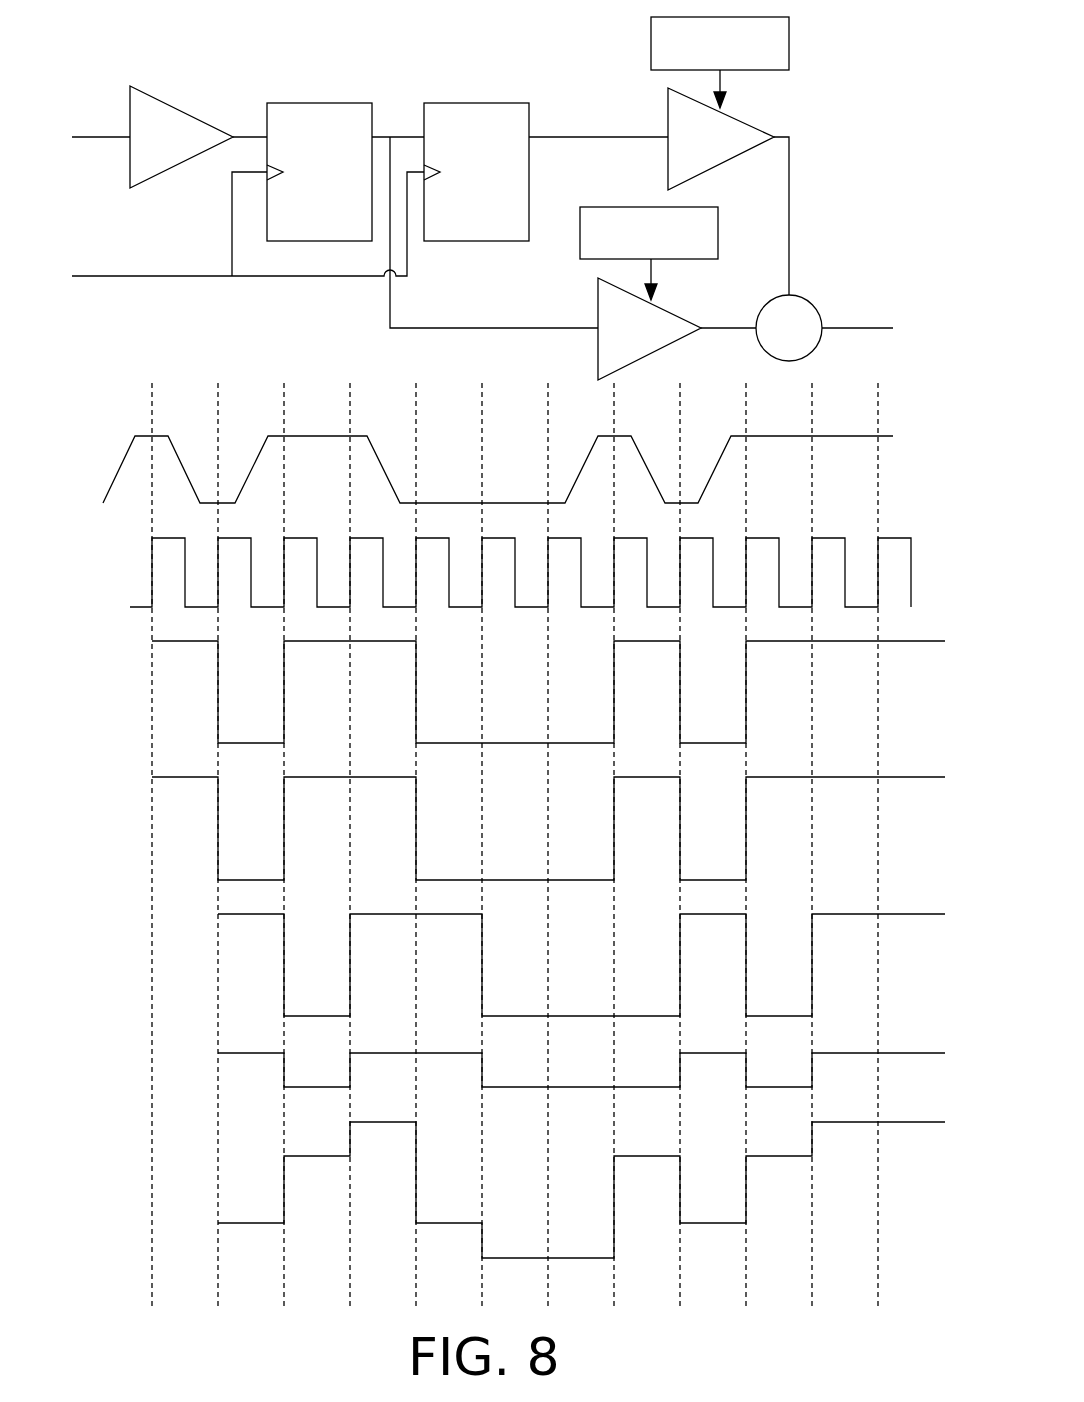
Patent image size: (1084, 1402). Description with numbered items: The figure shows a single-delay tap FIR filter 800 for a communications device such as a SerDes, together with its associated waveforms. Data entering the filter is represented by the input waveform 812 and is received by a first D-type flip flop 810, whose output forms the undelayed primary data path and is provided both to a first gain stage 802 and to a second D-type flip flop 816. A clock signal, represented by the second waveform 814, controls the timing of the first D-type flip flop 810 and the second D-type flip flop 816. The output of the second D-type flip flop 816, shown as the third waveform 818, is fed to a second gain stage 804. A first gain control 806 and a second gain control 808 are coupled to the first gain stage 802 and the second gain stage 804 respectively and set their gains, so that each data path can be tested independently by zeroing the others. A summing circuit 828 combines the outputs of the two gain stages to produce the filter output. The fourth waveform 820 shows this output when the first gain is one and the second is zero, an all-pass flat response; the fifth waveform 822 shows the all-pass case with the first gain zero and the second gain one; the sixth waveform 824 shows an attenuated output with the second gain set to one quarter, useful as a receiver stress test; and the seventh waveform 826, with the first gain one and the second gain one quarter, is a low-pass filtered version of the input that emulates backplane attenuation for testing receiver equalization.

The single-delay tap FIR filter 800 is at (276, 332).
The first gain stage 802 is at (660, 350).
The second gain stage 804 is at (722, 163).
The first gain control 806 is at (668, 259).
The second gain control 808 is at (738, 70).
The first D-type flip flop 810 is at (277, 241).
The input waveform 812 is at (135, 436).
The second waveform 814 is at (130, 607).
The second D-type flip flop 816 is at (452, 241).
The third waveform 818 is at (152, 641).
The fourth waveform 820 is at (204, 777).
The fifth waveform 822 is at (218, 914).
The sixth waveform 824 is at (218, 1053).
The seventh waveform 826 is at (218, 1223).
The summing circuit 828 is at (812, 352).